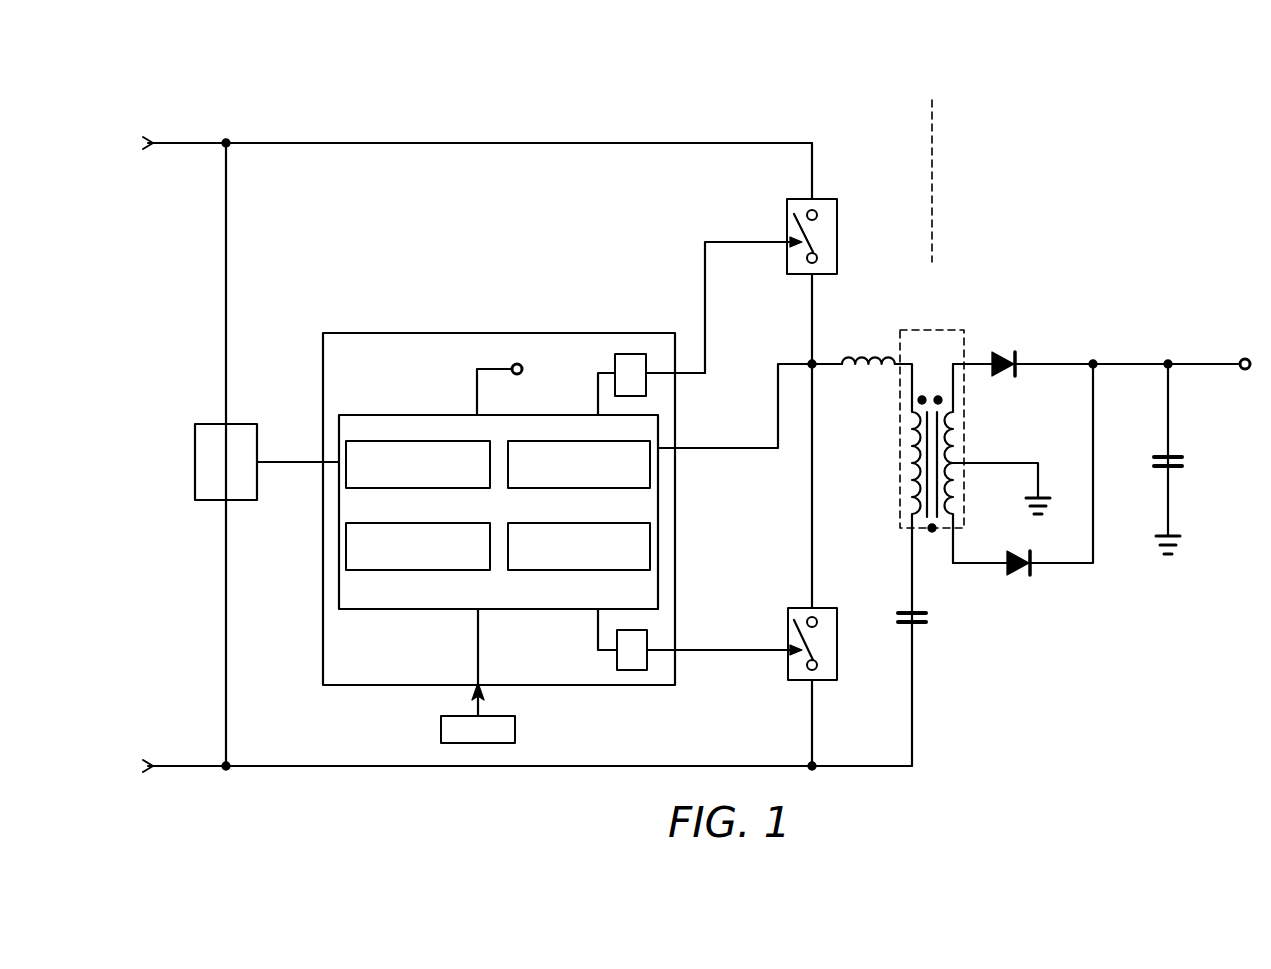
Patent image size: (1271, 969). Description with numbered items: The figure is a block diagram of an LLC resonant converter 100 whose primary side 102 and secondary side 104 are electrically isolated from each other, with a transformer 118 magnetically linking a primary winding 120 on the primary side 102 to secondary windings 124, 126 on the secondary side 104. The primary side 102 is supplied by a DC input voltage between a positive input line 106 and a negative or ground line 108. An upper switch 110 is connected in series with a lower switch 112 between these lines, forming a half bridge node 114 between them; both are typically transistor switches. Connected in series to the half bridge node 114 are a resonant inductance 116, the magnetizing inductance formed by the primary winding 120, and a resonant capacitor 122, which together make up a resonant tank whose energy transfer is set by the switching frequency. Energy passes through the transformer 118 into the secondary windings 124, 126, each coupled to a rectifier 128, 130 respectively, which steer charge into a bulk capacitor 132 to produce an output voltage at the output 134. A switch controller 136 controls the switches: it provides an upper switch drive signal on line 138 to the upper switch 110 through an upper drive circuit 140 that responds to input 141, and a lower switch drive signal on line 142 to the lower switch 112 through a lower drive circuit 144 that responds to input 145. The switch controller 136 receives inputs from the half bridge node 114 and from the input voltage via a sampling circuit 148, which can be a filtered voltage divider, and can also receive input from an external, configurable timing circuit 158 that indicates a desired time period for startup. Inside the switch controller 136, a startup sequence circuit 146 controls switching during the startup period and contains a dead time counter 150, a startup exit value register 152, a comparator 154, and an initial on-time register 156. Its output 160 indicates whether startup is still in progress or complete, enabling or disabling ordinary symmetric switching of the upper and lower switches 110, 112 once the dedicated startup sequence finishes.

The LLC resonant converter 100 is at (950, 95).
The primary side 102 is at (855, 145).
The secondary side 104 is at (1010, 147).
The positive input line 106 is at (176, 143).
The negative or ground line 108 is at (176, 766).
The upper switch 110 is at (837, 238).
The lower switch 112 is at (830, 608).
The half bridge node 114 is at (833, 364).
The resonant inductance 116 is at (872, 356).
The transformer 118 is at (936, 450).
The primary winding 120 is at (912, 426).
The resonant capacitor 122 is at (926, 622).
The secondary winding 124 is at (955, 402).
The secondary winding 126 is at (955, 494).
The rectifier 128 is at (1003, 352).
The rectifier 130 is at (1016, 575).
The bulk capacitor 132 is at (1180, 456).
The output 134 is at (1204, 364).
The switch controller 136 is at (334, 335).
The line 138 is at (733, 242).
The upper drive circuit 140 is at (630, 354).
The input 141 is at (598, 388).
The line 142 is at (735, 650).
The lower drive circuit 144 is at (617, 660).
The input 145 is at (598, 628).
The startup sequence circuit 146 is at (458, 415).
The sampling circuit 148 is at (195, 462).
The dead time counter 150 is at (472, 441).
The startup exit value register 152 is at (604, 441).
The comparator 154 is at (604, 523).
The initial on-time register 156 is at (472, 523).
The timing circuit 158 is at (492, 716).
The output 160 is at (494, 366).